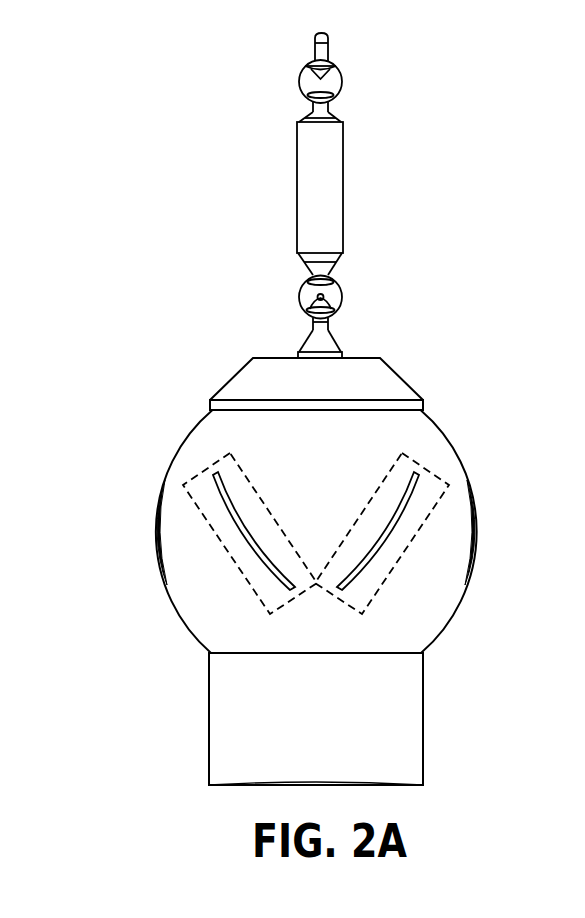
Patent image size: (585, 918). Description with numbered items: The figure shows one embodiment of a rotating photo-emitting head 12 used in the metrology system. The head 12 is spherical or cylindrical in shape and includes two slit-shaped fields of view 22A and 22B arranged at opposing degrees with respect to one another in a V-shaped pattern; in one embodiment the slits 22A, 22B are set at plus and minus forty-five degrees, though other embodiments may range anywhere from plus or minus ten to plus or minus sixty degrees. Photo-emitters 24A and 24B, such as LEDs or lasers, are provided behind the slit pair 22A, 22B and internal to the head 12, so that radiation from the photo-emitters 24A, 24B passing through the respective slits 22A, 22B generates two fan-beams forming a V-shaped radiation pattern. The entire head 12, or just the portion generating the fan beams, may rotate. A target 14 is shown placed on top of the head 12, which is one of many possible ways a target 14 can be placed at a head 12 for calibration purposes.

The photo-emitting head 12 is at (451, 445).
The target 14 is at (341, 186).
The first slit-shaped field of view 22A is at (222, 512).
The second slit-shaped field of view 22B is at (407, 518).
The first photo-emitter 24A is at (250, 588).
The second photo-emitter 24B is at (397, 563).